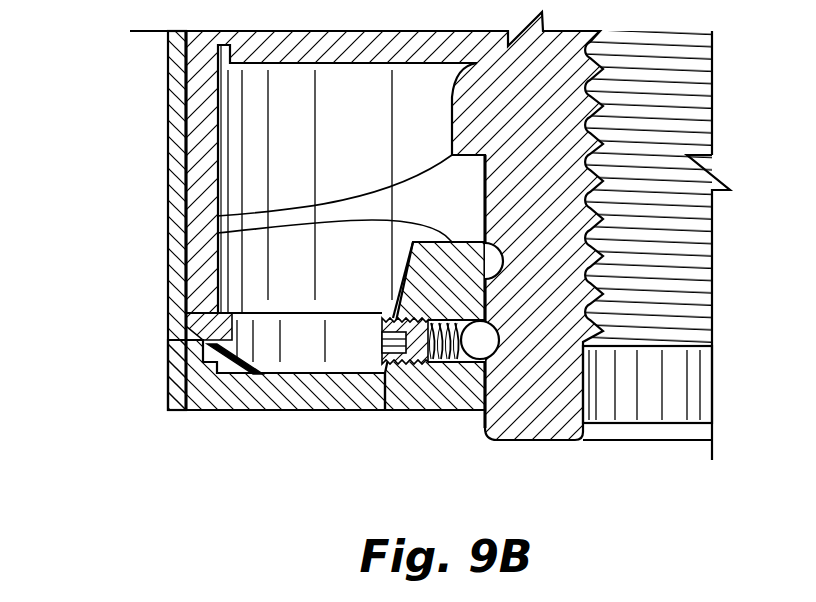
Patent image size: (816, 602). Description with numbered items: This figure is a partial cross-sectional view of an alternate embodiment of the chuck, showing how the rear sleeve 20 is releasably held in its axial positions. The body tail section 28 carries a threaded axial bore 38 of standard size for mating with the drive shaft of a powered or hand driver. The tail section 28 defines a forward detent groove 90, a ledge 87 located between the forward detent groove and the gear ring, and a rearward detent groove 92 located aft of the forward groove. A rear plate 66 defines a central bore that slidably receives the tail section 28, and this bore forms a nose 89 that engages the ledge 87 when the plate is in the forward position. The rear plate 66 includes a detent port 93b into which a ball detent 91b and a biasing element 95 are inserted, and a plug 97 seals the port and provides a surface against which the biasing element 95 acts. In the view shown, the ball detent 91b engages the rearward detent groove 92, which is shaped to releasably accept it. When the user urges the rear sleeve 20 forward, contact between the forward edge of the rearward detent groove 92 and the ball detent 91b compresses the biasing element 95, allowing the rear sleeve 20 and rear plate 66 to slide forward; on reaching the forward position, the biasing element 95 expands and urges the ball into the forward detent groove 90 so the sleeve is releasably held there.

The rear sleeve 20 is at (168, 130).
The body tail section 28 is at (557, 243).
The axial bore 38 is at (675, 320).
The rear plate 66 is at (297, 413).
The ledge 87 is at (217, 216).
The nose 89 is at (217, 233).
The forward detent groove 90 is at (500, 278).
The ball detent 91b is at (477, 347).
The rearward detent groove 92 is at (495, 265).
The detent port 93b is at (413, 263).
The biasing element 95 is at (432, 364).
The plug 97 is at (384, 319).